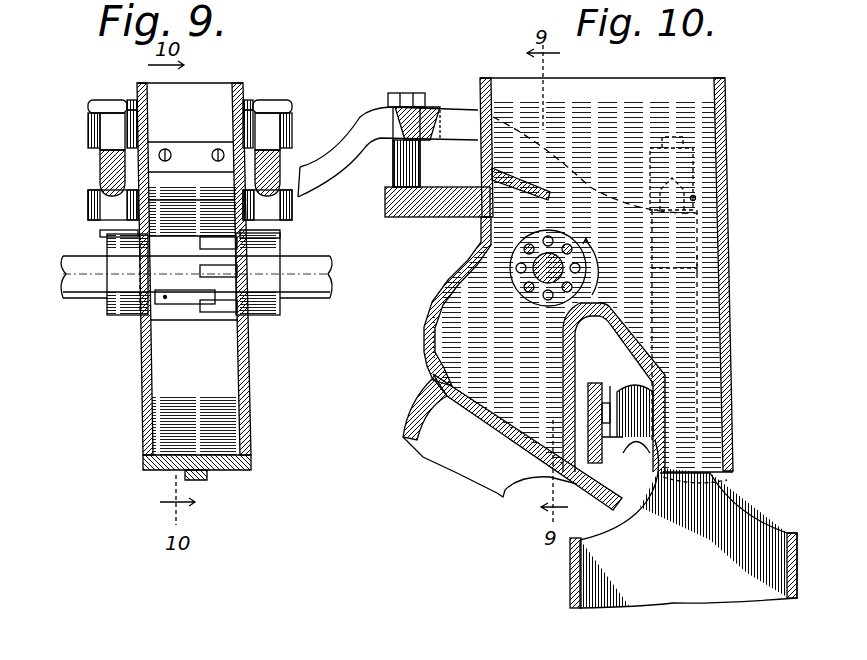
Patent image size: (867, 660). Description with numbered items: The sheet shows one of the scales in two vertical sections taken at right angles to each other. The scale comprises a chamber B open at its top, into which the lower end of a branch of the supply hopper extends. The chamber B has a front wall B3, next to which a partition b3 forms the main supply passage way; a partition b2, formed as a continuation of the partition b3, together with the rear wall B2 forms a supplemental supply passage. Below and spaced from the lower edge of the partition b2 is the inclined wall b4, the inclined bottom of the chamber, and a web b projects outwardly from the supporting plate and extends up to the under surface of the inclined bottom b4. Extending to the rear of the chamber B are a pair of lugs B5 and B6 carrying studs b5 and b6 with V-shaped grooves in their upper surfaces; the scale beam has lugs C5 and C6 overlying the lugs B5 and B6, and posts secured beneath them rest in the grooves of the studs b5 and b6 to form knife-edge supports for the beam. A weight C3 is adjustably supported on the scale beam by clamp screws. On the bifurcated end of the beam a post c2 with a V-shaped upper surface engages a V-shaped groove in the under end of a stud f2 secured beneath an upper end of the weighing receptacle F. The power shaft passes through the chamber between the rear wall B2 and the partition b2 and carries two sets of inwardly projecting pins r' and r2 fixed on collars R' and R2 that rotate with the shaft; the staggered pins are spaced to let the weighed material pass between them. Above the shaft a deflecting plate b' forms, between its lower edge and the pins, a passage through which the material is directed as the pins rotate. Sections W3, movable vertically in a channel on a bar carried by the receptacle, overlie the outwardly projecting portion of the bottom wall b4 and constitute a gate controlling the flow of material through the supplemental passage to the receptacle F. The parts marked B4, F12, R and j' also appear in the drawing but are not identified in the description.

In FIG. 9, the chamber B is at (250, 411).
In FIG. 10, the rear wall B2 is at (487, 226).
In FIG. 10, the front wall B3 is at (727, 306).
In FIG. 10, the frame wall portion B4 is at (467, 330).
In FIG. 9, the lug B5 is at (137, 200).
In FIG. 9, the lug B6 is at (292, 215).
In FIG. 10, the lug B6 is at (392, 217).
In FIG. 10, the weight C3 is at (452, 105).
In FIG. 9, the lug C5 is at (88, 133).
In FIG. 9, the lug C6 is at (290, 118).
In FIG. 10, the lug C6 is at (422, 152).
In FIG. 10, the web b is at (490, 475).
In FIG. 10, the deflecting plate b' is at (594, 165).
In FIG. 10, the partition b2 is at (614, 387).
In FIG. 10, the partition b3 is at (643, 360).
In FIG. 10, the inclined wall b4 is at (520, 440).
In FIG. 9, the stud b5 is at (100, 183).
In FIG. 9, the stud b6 is at (280, 178).
In FIG. 10, the stud b6 is at (393, 177).
In FIG. 10, the post c2 is at (697, 198).
In FIG. 10, the weighing receptacle F is at (683, 538).
In FIG. 10, the guide member F12 is at (700, 263).
In FIG. 10, the stud f2 is at (700, 152).
In FIG. 9, the shaft R is at (209, 281).
In FIG. 9, the collar R' is at (111, 297).
In FIG. 9, the collar R2 is at (280, 310).
In FIG. 9, the pins r' is at (185, 285).
In FIG. 9, the pins r2 is at (223, 303).
In FIG. 10, the sections W3 is at (652, 452).
In FIG. 9, the pin j' is at (99, 228).